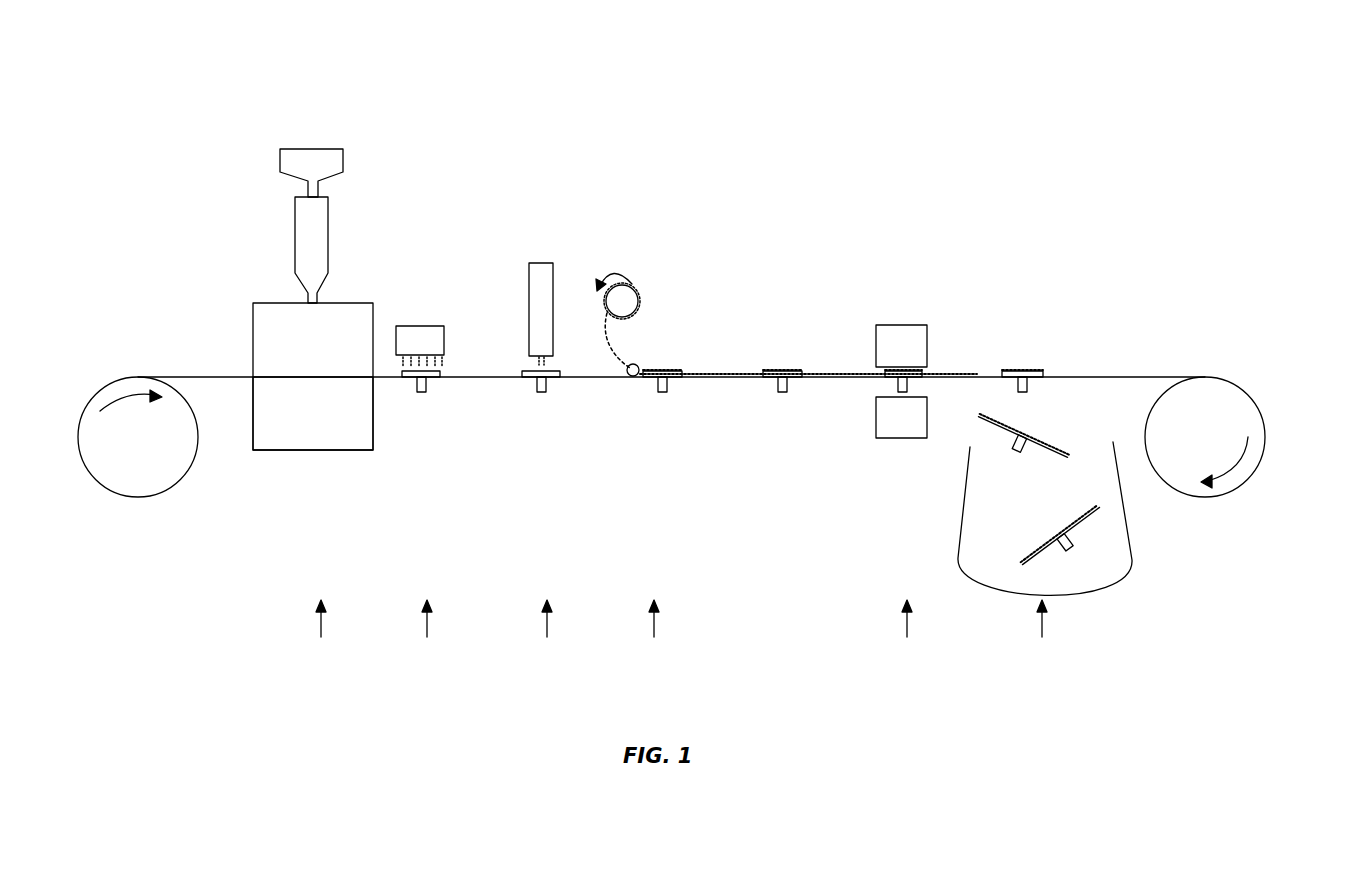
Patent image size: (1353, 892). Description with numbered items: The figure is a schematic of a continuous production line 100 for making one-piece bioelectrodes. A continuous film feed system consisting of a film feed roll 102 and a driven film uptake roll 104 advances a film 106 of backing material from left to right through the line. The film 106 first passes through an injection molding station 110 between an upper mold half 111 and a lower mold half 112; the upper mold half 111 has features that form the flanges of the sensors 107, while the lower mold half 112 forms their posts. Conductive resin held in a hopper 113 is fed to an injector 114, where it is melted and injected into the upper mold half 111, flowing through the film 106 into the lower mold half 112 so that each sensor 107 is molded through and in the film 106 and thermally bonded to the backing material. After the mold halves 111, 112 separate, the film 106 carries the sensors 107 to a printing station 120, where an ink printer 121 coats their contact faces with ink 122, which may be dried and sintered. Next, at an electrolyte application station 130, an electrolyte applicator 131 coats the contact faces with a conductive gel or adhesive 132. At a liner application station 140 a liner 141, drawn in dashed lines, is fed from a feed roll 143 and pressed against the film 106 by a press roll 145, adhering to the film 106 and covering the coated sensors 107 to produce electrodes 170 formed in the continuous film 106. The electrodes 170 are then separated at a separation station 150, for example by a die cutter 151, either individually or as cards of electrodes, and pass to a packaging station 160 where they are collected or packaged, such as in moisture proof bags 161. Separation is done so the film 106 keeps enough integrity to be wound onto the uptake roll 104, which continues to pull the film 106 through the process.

The production line 100 is at (932, 145).
The film feed roll 102 is at (149, 480).
The driven film uptake roll 104 is at (1250, 417).
The film 106 is at (1127, 372).
The sensors 107 is at (425, 382).
The injection molding station 110 is at (324, 633).
The upper mold half 111 is at (268, 323).
The lower mold half 112 is at (322, 442).
The hopper 113 is at (310, 155).
The injector 114 is at (305, 225).
The printing station 120 is at (430, 633).
The ink printer 121 is at (418, 333).
The ink 122 is at (442, 357).
The electrolyte application station 130 is at (546, 519).
The electrolyte applicator 131 is at (538, 272).
The conductive gel or adhesive 132 is at (537, 363).
The liner application station 140 is at (719, 518).
The liner 141 is at (617, 358).
The feed roll 143 is at (625, 295).
The press roll 145 is at (632, 365).
The separation station 150 is at (910, 633).
The die cutter 151 is at (897, 332).
The packaging station 160 is at (1033, 518).
The moisture proof bags 161 is at (1132, 540).
The electrodes 170 is at (920, 375).